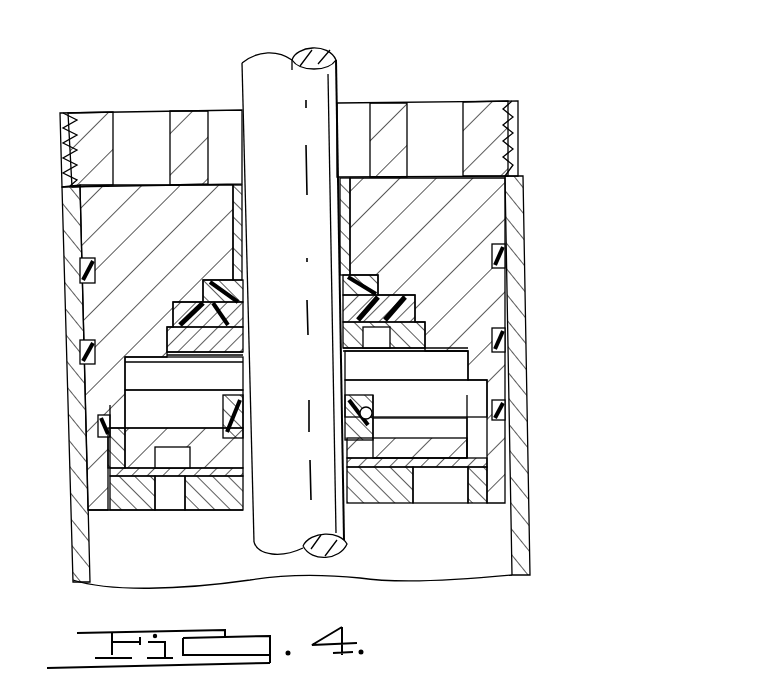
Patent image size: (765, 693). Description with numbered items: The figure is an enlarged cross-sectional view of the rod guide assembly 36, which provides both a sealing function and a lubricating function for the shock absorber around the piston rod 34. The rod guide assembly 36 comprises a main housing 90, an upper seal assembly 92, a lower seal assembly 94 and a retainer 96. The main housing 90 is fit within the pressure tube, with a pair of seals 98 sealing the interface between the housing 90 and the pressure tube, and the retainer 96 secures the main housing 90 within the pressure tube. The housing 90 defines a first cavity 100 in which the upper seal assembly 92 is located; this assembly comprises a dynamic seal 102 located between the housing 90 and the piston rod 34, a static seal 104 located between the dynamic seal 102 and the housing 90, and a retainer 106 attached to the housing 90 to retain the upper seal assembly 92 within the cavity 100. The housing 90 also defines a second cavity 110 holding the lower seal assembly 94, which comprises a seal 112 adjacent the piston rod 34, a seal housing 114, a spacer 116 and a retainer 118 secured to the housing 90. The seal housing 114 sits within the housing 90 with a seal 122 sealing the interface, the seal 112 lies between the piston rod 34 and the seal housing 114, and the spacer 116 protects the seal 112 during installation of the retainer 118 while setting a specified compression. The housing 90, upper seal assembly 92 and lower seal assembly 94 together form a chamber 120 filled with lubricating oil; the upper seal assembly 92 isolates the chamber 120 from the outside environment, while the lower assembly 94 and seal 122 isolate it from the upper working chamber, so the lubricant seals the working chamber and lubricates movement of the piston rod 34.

The rod guide assembly 36 is at (582, 88).
The piston rod 34 is at (300, 128).
The retainer 96 is at (387, 108).
The main housing 90 is at (452, 213).
The seals 98 is at (500, 260).
The dynamic seal 102 is at (232, 292).
The static seal 104 is at (212, 316).
The retainer 106 is at (165, 343).
The first cavity 100 is at (172, 372).
The second cavity 110 is at (128, 413).
The upper seal assembly 92 is at (408, 359).
The lower seal assembly 94 is at (414, 397).
The chamber 120 is at (368, 370).
The seal 112 is at (232, 395).
The spacer 116 is at (157, 470).
The seal housing 114 is at (470, 453).
The retainer 118 is at (476, 495).
The seal 122 is at (490, 421).